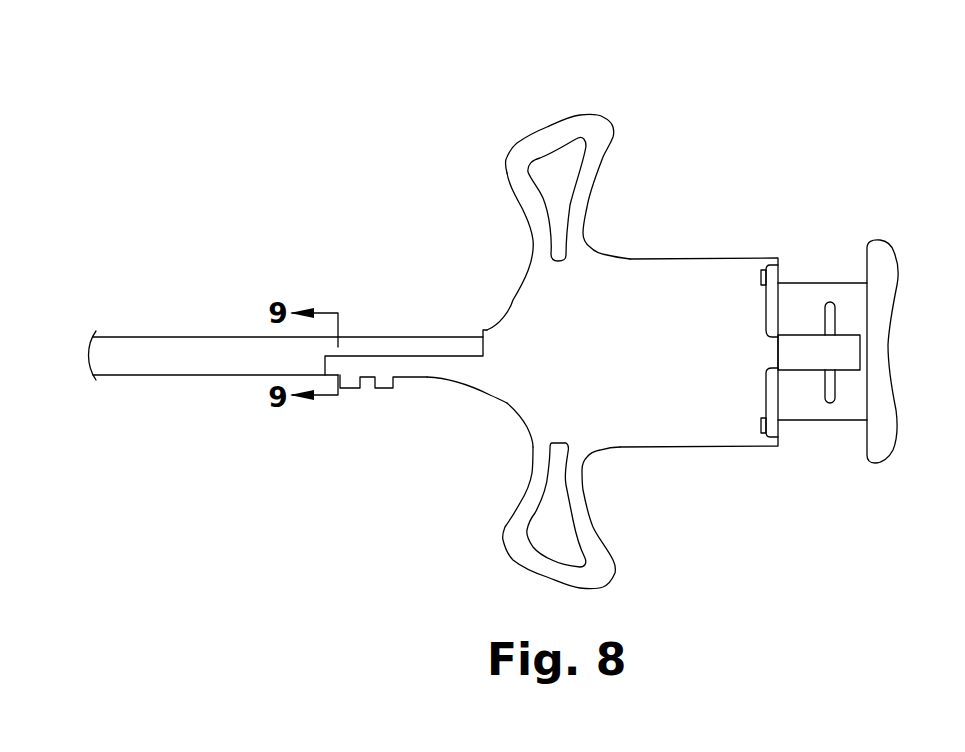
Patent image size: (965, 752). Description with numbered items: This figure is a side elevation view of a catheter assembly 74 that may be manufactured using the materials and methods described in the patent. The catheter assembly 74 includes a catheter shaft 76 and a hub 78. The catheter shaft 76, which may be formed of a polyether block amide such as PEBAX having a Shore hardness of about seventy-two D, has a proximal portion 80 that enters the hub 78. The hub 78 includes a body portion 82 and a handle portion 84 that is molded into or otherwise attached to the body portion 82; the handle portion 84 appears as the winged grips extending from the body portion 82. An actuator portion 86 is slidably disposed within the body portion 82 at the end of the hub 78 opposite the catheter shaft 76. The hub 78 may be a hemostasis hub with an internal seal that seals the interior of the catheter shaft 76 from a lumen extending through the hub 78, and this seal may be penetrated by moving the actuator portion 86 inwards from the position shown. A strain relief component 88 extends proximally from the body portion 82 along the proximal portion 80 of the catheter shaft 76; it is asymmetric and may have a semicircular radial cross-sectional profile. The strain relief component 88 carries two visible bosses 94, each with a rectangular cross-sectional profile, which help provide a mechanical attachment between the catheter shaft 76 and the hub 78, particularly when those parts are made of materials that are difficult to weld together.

The catheter assembly 74 is at (347, 120).
The catheter shaft 76 is at (152, 365).
The hub 78 is at (678, 132).
The proximal portion 80 is at (380, 337).
The body portion 82 is at (692, 438).
The handle portion 84 is at (547, 130).
The actuator portion 86 is at (855, 382).
The strain relief component 88 is at (425, 367).
The bosses 94 is at (350, 380).